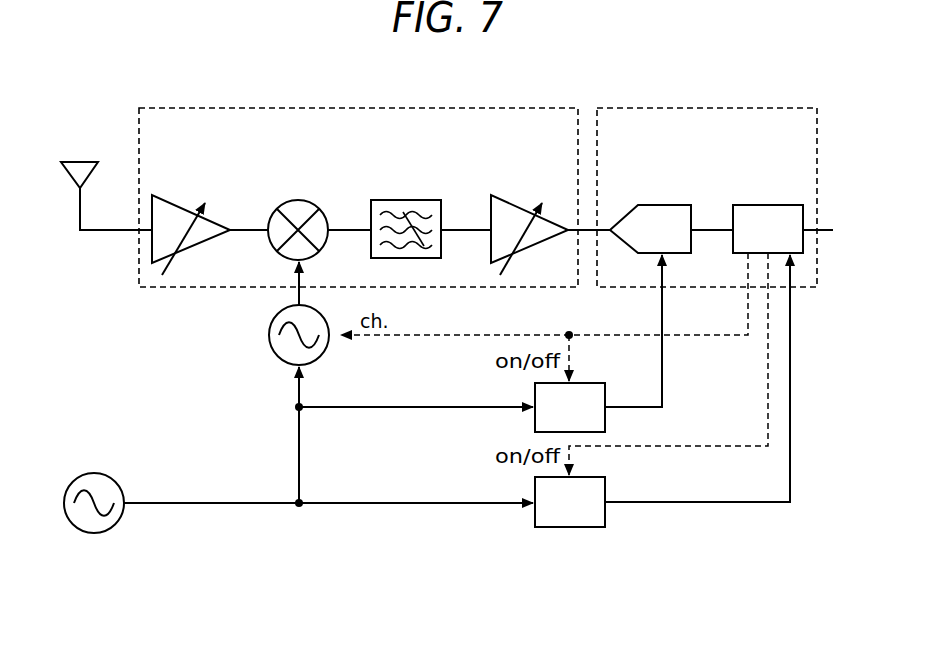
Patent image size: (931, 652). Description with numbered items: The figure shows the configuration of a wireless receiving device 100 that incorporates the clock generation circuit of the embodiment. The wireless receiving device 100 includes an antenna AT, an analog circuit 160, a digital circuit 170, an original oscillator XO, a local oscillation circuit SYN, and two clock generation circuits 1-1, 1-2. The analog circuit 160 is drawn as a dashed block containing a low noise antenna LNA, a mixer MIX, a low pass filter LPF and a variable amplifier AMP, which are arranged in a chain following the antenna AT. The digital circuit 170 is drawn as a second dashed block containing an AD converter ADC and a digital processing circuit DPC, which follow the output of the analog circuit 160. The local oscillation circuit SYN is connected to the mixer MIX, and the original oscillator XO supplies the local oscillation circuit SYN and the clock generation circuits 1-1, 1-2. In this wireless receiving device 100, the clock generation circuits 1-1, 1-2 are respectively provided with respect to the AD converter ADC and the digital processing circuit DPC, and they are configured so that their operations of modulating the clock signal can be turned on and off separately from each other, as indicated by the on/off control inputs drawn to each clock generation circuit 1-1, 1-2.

The wireless receiving device 100 is at (152, 564).
The analog circuit 160 is at (529, 108).
The digital circuit 170 is at (766, 107).
The antenna AT is at (72, 167).
The low noise antenna LNA is at (174, 210).
The mixer MIX is at (298, 210).
The low pass filter LPF is at (425, 209).
The variable amplifier AMP is at (507, 210).
The AD converter ADC is at (658, 209).
The digital processing circuit DPC is at (766, 209).
The local oscillation circuit SYN is at (282, 351).
The original oscillator XO is at (93, 480).
The clock generation circuit 1-1 is at (533, 418).
The clock generation circuit 1-2 is at (533, 508).